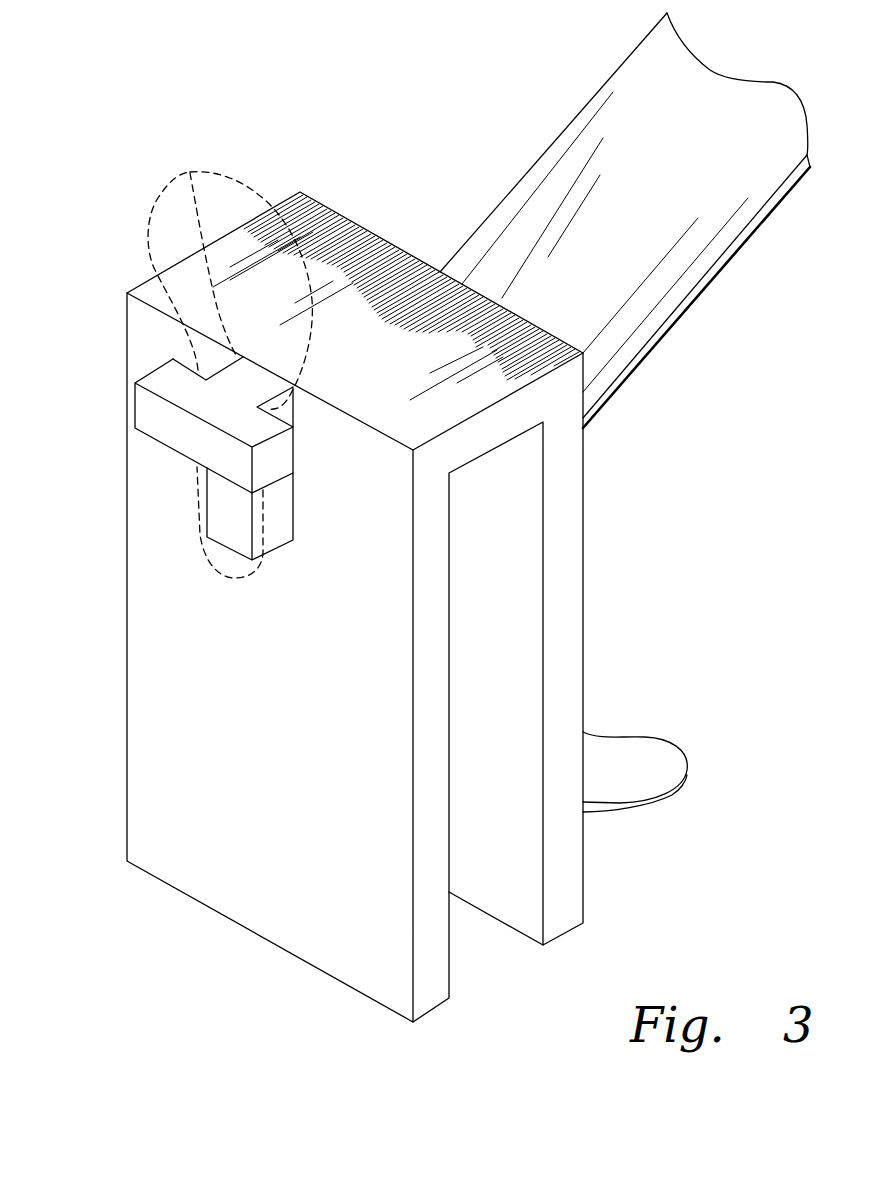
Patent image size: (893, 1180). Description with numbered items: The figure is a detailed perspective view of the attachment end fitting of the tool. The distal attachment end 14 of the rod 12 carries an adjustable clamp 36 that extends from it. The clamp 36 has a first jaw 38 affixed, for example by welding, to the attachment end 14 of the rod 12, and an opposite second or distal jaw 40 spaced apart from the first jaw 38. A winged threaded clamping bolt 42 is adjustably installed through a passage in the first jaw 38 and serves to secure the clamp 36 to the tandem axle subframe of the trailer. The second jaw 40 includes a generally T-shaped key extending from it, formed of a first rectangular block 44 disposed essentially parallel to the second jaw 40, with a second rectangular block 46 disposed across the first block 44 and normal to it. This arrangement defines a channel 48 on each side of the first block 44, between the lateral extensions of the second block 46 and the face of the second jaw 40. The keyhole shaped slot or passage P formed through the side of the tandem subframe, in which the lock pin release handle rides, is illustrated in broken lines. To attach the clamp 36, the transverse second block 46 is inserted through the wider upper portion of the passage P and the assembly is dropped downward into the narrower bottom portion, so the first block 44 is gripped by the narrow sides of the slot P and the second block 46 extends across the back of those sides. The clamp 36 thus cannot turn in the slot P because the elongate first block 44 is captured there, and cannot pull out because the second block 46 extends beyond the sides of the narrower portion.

The rod 12 is at (625, 220).
The attachment end 14 is at (647, 352).
The adjustable clamp 36 is at (412, 607).
The first jaw 38 is at (583, 590).
The second jaw 40 is at (127, 693).
The winged threaded clamping bolt 42 is at (687, 768).
The first rectangular block 44 is at (282, 547).
The second rectangular block 46 is at (167, 445).
The channel 48 is at (218, 363).
The keyhole shaped slot or passage P is at (150, 188).